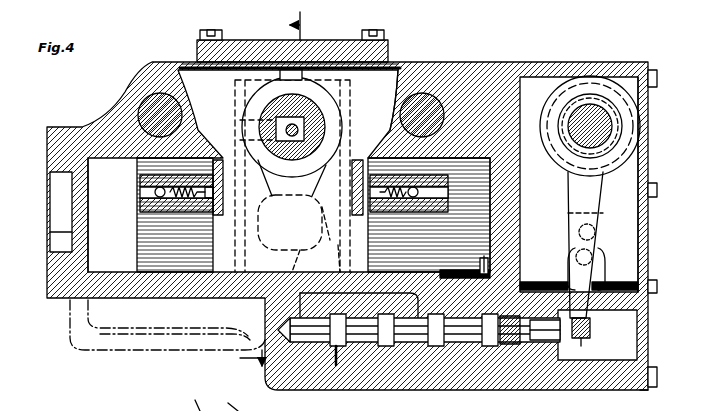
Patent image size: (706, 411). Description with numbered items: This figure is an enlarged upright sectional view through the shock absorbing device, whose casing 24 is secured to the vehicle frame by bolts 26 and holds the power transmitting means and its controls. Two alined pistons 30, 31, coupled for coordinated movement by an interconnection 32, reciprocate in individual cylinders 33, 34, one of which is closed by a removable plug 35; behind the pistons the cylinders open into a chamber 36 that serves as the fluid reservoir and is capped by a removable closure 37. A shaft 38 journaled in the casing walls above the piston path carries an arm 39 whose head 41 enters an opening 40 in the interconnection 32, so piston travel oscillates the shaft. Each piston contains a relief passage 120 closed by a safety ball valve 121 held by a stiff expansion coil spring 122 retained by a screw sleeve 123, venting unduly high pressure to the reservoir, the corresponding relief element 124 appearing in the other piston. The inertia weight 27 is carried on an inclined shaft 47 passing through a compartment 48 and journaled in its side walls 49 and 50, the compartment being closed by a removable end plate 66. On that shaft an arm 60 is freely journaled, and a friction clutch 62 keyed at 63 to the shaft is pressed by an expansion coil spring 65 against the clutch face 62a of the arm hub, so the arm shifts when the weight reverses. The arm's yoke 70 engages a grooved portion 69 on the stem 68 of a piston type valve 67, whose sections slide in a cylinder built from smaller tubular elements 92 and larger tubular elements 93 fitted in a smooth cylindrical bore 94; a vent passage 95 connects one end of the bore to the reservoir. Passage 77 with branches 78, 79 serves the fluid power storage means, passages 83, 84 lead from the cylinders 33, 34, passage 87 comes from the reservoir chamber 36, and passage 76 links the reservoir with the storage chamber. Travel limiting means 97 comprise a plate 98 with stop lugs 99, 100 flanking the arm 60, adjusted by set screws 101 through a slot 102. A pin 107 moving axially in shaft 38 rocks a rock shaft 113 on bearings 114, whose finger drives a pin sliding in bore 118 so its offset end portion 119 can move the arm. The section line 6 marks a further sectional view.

The section line 6 is at (275, 194).
The casing 24 is at (468, 78).
The bolts 26 is at (140, 103).
The weight 27 is at (610, 400).
The piston 30 is at (158, 248).
The piston 31 is at (432, 248).
The interconnection 32 is at (338, 245).
The cylinder 33 is at (98, 237).
The cylinder 34 is at (480, 217).
The removable plug 35 is at (88, 162).
The chamber 36 is at (381, 96).
The removable closure 37 is at (330, 56).
The shaft 38 is at (323, 117).
The arm 39 is at (330, 172).
The opening 40 is at (322, 207).
The head 41 is at (264, 202).
The shaft 47 is at (585, 118).
The compartment 48 is at (540, 96).
The side wall 49 is at (280, 405).
The side wall 50 is at (165, 405).
The arm 60 is at (592, 198).
The friction clutch 62 is at (223, 401).
The clutch face 62a is at (626, 117).
The key 63 is at (189, 399).
The expansion coil spring 65 is at (614, 133).
The removable end plate 66 is at (646, 173).
The piston type valve 67 is at (496, 348).
The stem 68 is at (540, 338).
The grooved portion 69 is at (584, 340).
The yoke 70 is at (590, 323).
The passage 76 is at (339, 288).
The passage 77 is at (366, 368).
The branch 78 is at (333, 368).
The branch 79 is at (490, 356).
The passage 83 is at (123, 333).
The passage 84 is at (483, 256).
The passage 87 is at (318, 250).
The tubular elements 92 is at (385, 368).
The tubular elements 93 is at (413, 368).
The cylindrical bore 94 is at (455, 360).
The vent passage 95 is at (300, 288).
The means for limiting travel 97 is at (598, 240).
The plate 98 is at (568, 260).
The stop lug 99 is at (568, 275).
The stop lug 100 is at (605, 278).
The set screws 101 is at (596, 258).
The slot 102 is at (600, 215).
The pin 107 is at (287, 131).
The rock shaft 113 is at (247, 92).
The bearings 114 is at (262, 66).
The bore 118 is at (478, 270).
The offset end portion 119 is at (580, 293).
The passage 120 is at (226, 192).
The safety ball valve 121 is at (150, 198).
The expansion coil spring 122 is at (176, 184).
The screw sleeve 123 is at (205, 185).
The spring 124 is at (398, 212).